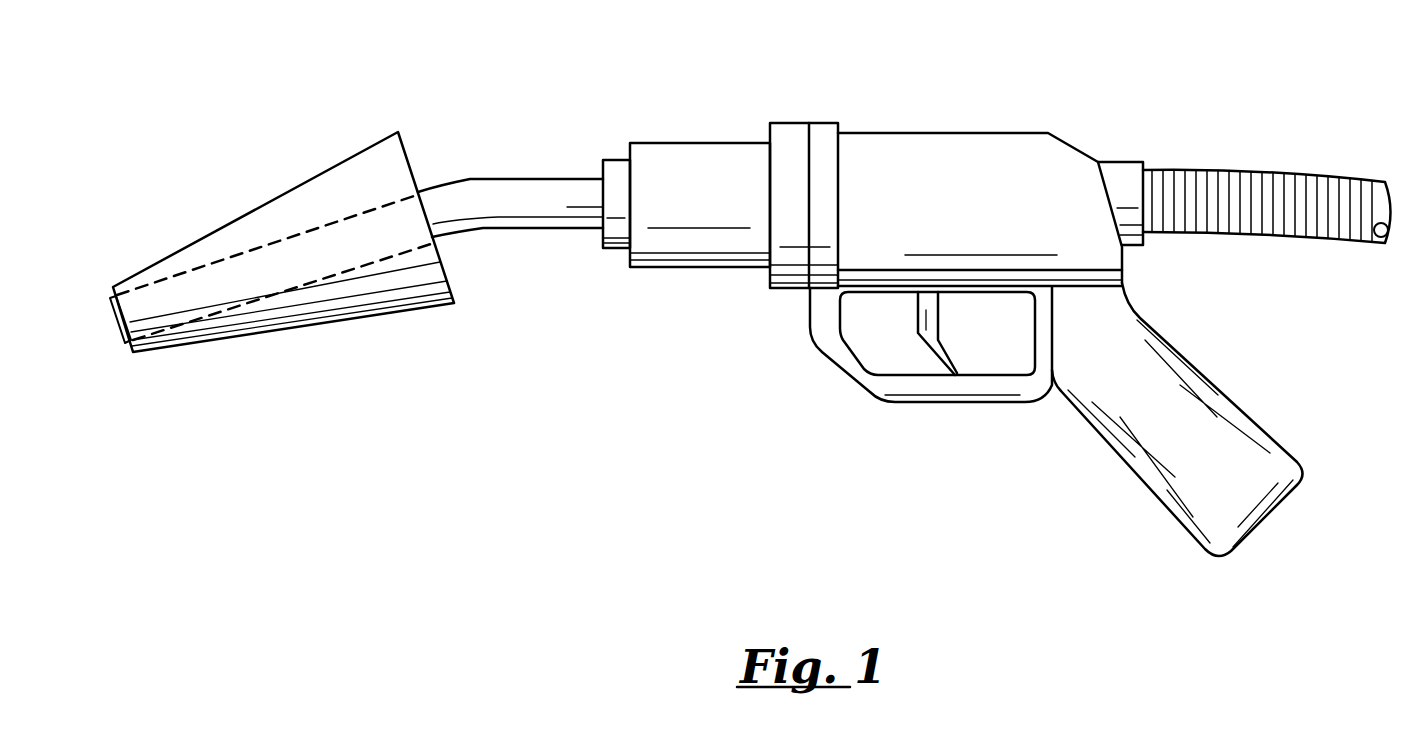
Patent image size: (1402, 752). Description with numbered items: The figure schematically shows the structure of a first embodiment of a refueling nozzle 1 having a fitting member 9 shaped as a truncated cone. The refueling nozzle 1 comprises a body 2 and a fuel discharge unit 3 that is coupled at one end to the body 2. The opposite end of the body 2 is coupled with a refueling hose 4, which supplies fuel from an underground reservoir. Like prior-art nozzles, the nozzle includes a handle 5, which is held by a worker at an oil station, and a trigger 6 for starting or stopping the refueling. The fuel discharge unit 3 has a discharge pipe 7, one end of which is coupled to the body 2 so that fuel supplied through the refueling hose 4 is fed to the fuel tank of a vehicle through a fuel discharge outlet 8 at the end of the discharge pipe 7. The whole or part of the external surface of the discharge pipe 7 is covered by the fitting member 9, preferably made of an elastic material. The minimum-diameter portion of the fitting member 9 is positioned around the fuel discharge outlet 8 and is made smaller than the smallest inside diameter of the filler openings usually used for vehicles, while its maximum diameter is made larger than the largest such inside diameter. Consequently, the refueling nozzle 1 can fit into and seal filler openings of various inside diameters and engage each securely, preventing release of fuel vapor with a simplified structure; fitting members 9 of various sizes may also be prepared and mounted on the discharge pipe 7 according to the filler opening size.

The refueling nozzle 1 is at (673, 377).
The body 2 is at (1168, 80).
The fuel discharge unit 3 is at (605, 85).
The refueling hose 4 is at (1278, 188).
The handle 5 is at (1207, 400).
The trigger 6 is at (932, 335).
The discharge pipe 7 is at (535, 213).
The fuel discharge outlet 8 is at (117, 328).
The fitting member 9 is at (195, 262).